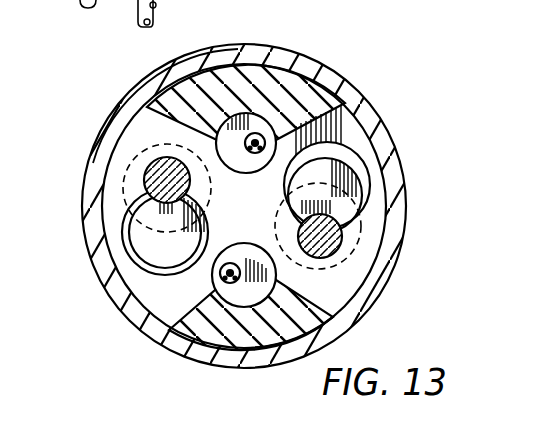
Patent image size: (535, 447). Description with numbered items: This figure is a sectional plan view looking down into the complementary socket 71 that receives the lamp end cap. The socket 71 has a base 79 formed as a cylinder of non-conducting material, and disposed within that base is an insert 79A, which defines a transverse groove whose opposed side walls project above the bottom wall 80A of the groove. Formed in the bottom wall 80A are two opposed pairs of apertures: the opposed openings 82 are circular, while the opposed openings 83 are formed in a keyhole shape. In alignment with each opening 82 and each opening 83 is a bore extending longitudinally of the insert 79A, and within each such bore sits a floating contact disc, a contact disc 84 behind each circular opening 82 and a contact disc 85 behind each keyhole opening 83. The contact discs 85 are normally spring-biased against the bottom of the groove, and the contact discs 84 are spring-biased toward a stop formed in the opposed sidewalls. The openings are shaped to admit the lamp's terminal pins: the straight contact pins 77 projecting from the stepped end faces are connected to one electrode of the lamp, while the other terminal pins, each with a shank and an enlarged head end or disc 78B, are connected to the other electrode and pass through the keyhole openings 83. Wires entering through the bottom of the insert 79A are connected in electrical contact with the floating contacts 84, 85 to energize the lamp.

The complementary socket 71 is at (390, 42).
The contact pin 77 is at (298, 68).
The base 79 is at (380, 117).
The insert 79A is at (340, 288).
The enlarged head end 78B is at (353, 246).
The circular opening 82 is at (243, 135).
The keyhole-shaped opening 83 is at (348, 205).
The floating contact disc 84 is at (212, 165).
The floating contact disc 85 is at (152, 228).
The bottom wall of the groove 80A is at (177, 293).